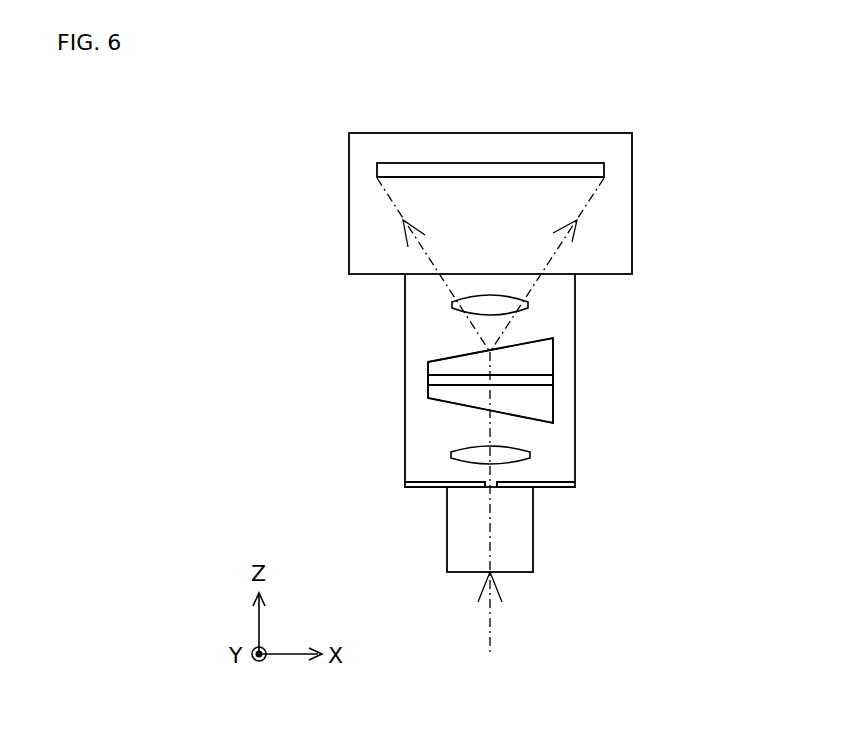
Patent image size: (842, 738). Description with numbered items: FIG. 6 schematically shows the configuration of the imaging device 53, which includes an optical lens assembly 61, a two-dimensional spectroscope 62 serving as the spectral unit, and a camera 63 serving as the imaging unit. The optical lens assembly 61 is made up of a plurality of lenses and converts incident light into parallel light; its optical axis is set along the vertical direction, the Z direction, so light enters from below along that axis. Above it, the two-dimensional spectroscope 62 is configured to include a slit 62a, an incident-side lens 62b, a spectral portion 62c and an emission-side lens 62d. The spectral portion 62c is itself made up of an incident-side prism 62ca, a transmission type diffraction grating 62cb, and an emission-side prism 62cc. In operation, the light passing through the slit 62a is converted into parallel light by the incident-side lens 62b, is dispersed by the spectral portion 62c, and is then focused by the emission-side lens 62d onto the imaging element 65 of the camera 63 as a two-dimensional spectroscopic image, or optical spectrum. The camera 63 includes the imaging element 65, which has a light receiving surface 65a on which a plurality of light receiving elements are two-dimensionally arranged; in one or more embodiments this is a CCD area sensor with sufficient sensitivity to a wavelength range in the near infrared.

The imaging device 53 is at (668, 100).
The camera 63 is at (632, 203).
The imaging element 65 is at (377, 171).
The light receiving surface 65a is at (490, 178).
The two-dimensional spectroscope 62 is at (575, 378).
The slit 62a is at (493, 492).
The incident-side lens 62b is at (530, 453).
The spectral portion 62c is at (415, 340).
The incident-side prism 62ca is at (428, 395).
The transmission type diffraction grating 62cb is at (428, 379).
The emission-side prism 62cc is at (428, 365).
The emission-side lens 62d is at (529, 305).
The optical lens assembly 61 is at (533, 540).